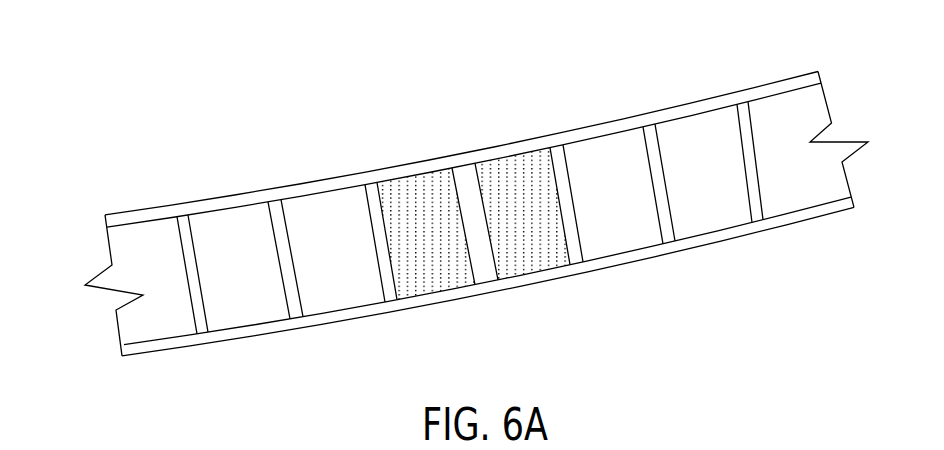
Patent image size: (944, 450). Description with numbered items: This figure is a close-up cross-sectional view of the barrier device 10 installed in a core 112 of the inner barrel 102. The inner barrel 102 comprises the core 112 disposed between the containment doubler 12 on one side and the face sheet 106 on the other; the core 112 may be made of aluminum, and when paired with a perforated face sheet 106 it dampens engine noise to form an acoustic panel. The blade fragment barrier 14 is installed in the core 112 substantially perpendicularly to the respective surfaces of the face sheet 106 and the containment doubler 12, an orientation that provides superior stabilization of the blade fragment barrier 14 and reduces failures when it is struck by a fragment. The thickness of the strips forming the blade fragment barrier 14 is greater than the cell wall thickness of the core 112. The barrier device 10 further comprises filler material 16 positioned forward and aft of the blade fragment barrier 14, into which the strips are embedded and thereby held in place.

The inner barrel 102 is at (128, 62).
The barrier device 10 is at (460, 115).
The containment doubler 12 is at (145, 210).
The face sheet 106 is at (172, 348).
The blade fragment barrier 14 is at (490, 282).
The filler material 16 is at (441, 250).
The core 112 is at (843, 133).